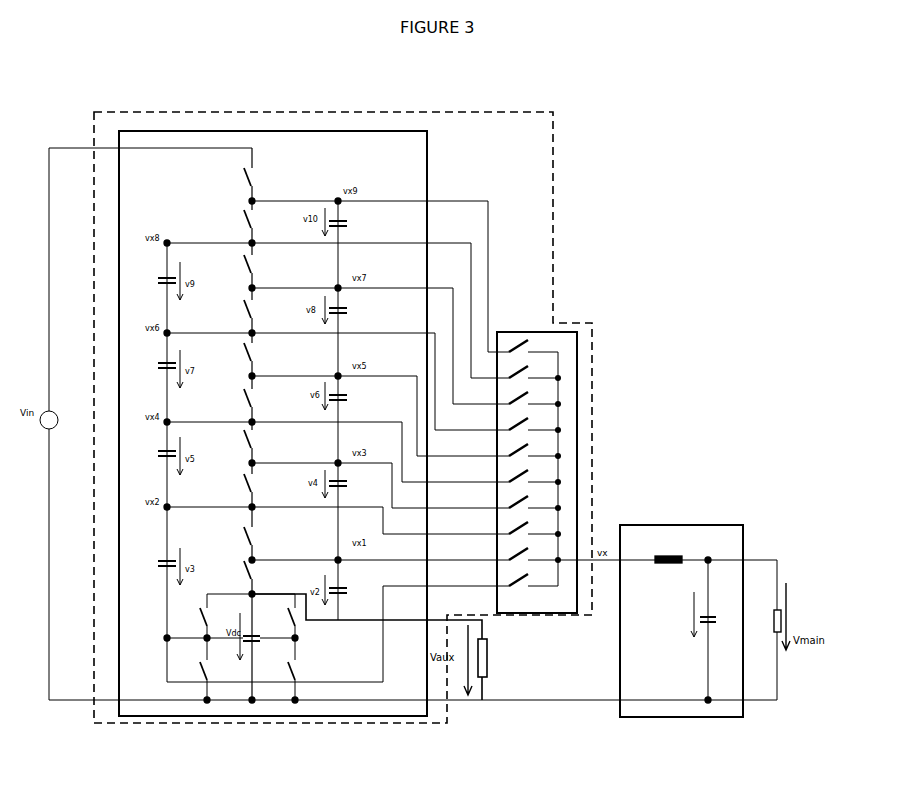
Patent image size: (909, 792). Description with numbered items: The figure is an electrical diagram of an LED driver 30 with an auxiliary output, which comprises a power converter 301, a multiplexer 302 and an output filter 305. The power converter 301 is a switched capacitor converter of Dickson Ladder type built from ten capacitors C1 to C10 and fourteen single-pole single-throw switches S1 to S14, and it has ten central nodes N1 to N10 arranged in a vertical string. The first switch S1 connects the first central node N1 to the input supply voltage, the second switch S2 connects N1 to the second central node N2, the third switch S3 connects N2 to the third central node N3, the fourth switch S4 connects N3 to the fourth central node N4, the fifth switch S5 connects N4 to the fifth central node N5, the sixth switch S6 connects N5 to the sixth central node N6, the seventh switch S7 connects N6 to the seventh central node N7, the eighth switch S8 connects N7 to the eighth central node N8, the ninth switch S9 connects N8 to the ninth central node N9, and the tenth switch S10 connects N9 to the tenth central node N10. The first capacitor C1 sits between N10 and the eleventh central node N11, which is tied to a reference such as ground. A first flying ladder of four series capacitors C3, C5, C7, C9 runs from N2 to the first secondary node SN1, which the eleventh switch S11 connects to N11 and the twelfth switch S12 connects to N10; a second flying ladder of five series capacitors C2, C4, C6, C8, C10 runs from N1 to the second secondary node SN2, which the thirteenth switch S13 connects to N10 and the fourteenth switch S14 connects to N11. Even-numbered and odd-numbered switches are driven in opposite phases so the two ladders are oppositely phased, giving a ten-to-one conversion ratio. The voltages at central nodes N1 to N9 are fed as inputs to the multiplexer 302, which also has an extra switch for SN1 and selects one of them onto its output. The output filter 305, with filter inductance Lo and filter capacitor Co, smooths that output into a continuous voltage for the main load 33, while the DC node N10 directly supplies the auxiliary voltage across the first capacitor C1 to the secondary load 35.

The driver 30 is at (567, 143).
The power converter 301 is at (418, 148).
The multiplexer 302 is at (545, 320).
The output filter 305 is at (681, 579).
The main load 33 is at (790, 615).
The secondary load 35 is at (490, 665).
The first switch S1 is at (258, 172).
The second switch S2 is at (243, 217).
The third switch S3 is at (256, 265).
The fourth switch S4 is at (256, 311).
The fifth switch S5 is at (243, 361).
The sixth switch S6 is at (243, 405).
The seventh switch S7 is at (245, 433).
The eighth switch S8 is at (245, 484).
The ninth switch S9 is at (245, 530).
The tenth switch S10 is at (245, 574).
The eleventh switch S11 is at (200, 670).
The twelfth switch S12 is at (200, 616).
The thirteenth switch S13 is at (292, 612).
The fourteenth switch S14 is at (300, 668).
The first central node N1 is at (258, 200).
The second central node N2 is at (248, 242).
The third central node N3 is at (248, 287).
The fourth central node N4 is at (248, 332).
The fifth central node N5 is at (258, 375).
The sixth central node N6 is at (258, 421).
The seventh central node N7 is at (258, 462).
The eighth central node N8 is at (258, 506).
The ninth central node N9 is at (258, 559).
The tenth central node N10 is at (258, 593).
The eleventh central node N11 is at (252, 705).
The first secondary node SN1 is at (205, 640).
The second secondary node SN2 is at (297, 642).
The first capacitor C1 is at (255, 644).
The capacitor C2 is at (345, 593).
The capacitor C3 is at (157, 564).
The capacitor C4 is at (345, 486).
The capacitor C5 is at (157, 454).
The capacitor C6 is at (345, 400).
The capacitor C7 is at (157, 366).
The capacitor C8 is at (345, 313).
The capacitor C9 is at (157, 281).
The capacitor C10 is at (346, 226).
The filter inductance Lo is at (668, 552).
The filter capacitor Co is at (715, 630).